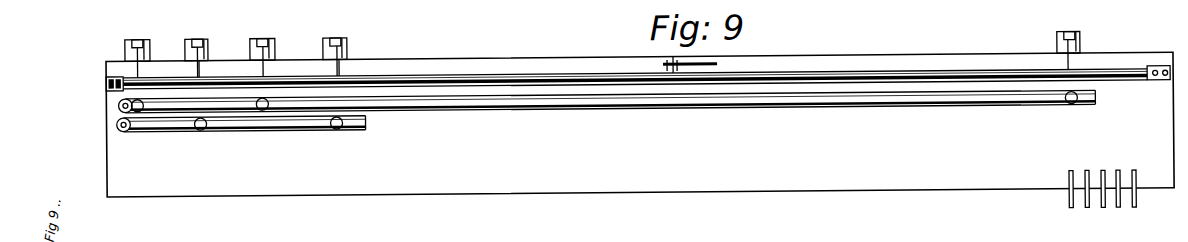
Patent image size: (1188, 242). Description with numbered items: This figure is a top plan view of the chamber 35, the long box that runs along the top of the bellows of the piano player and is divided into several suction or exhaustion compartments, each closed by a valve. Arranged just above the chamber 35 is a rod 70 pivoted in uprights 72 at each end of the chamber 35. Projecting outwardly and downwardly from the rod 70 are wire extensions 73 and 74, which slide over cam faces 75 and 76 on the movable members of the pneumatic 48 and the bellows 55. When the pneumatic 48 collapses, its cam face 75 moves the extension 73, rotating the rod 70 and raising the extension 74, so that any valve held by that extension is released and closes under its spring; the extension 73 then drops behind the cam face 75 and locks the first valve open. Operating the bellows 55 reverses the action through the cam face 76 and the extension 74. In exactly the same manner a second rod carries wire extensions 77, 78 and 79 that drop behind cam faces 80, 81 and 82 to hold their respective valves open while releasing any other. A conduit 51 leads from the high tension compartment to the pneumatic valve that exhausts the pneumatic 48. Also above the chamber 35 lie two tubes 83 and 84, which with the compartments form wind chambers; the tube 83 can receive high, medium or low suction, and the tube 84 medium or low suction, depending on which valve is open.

The chamber 35 is at (640, 124).
The pneumatic 48 is at (348, 52).
The conduit 51 is at (1072, 216).
The bellows 55 is at (189, 54).
The rod 70 is at (1125, 80).
The uprights 72 is at (108, 90).
The wire extension 73 is at (341, 72).
The wire extension 74 is at (201, 66).
The cam face 75 is at (338, 41).
The cam face 76 is at (198, 41).
The wire extension 77 is at (1073, 67).
The wire extension 78 is at (268, 71).
The wire extension 79 is at (135, 69).
The cam face 80 is at (1058, 44).
The cam face 81 is at (264, 41).
The cam face 82 is at (131, 41).
The tube 83 is at (798, 113).
The tube 84 is at (350, 131).